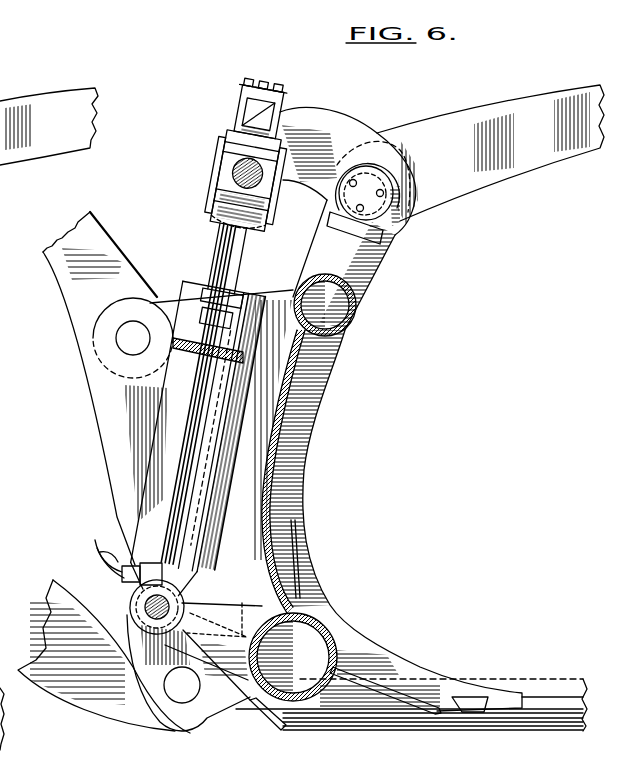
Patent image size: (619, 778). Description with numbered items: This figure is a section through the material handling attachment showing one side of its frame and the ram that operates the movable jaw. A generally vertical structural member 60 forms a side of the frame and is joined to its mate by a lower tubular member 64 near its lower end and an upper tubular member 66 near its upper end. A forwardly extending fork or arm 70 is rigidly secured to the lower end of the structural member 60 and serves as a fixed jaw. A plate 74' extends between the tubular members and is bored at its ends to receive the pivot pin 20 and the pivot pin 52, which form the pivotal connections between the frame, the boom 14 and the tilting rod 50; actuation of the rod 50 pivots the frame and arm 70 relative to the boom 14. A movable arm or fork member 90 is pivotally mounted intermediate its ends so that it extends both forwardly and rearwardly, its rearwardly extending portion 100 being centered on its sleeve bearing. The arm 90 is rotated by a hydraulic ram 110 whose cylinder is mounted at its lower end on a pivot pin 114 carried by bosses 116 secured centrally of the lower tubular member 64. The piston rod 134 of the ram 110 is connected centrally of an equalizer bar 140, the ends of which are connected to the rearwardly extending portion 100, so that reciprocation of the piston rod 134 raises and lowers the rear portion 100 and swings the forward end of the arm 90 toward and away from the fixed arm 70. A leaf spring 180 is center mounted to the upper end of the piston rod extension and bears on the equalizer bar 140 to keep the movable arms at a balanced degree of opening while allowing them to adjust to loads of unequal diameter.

The boom 14 is at (50, 608).
The pivot pin 20 is at (186, 692).
The rod 50 is at (72, 274).
The pivot pin 52 is at (126, 341).
The structural member 60 is at (320, 440).
The tubular member 64 is at (337, 640).
The tubular member 66 is at (352, 312).
The fork or arm 70 is at (523, 676).
The plate 74' is at (115, 453).
The arm or fork member 90 is at (527, 162).
The rearwardly extending portion 100 is at (356, 122).
The hydraulic ram 110 is at (168, 420).
The pivot pin 114 is at (148, 600).
The boss 116 is at (244, 692).
The piston rod 134 is at (220, 258).
The equalizer bar 140 is at (228, 158).
The leaf spring 180 is at (262, 118).